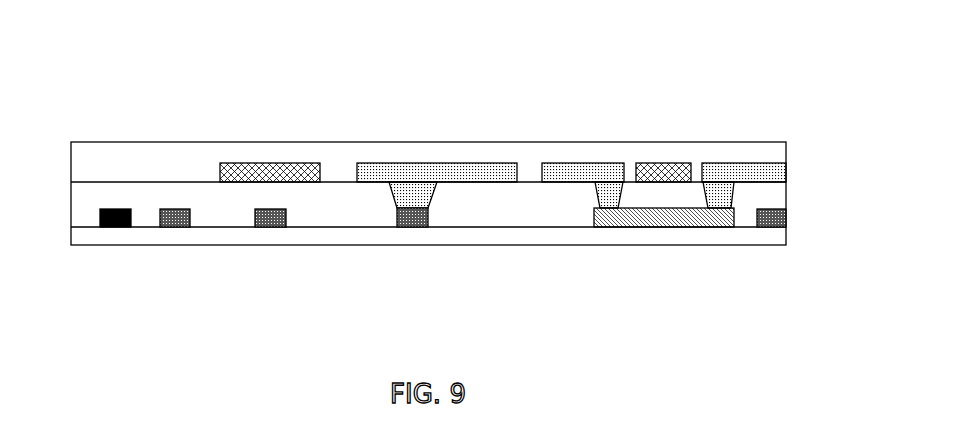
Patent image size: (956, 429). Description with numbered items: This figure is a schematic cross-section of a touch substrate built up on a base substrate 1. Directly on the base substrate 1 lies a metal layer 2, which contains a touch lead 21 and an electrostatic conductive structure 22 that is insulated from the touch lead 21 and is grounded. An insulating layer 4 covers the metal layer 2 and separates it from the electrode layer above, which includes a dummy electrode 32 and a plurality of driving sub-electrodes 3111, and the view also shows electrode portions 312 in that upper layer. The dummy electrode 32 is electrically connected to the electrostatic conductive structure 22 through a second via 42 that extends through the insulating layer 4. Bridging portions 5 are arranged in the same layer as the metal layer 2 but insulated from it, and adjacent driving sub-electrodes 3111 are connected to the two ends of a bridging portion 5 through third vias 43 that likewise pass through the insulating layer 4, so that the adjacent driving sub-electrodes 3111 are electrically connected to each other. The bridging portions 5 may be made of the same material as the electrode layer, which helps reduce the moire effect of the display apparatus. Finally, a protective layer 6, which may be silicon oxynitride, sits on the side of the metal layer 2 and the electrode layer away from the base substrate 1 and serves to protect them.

The base substrate 1 is at (83, 237).
The metal layer 2 is at (115, 299).
The insulating layer 4 is at (148, 200).
The bridging portion 5 is at (665, 227).
The protective layer 6 is at (190, 154).
The touch lead 21 is at (115, 227).
The electrostatic conductive structure 22 is at (176, 227).
The dummy electrode 32 is at (488, 172).
The second via 42 is at (405, 195).
The third via 43 is at (608, 195).
The first electrode portion 312 is at (267, 163).
The driving sub-electrode 3111 is at (560, 163).